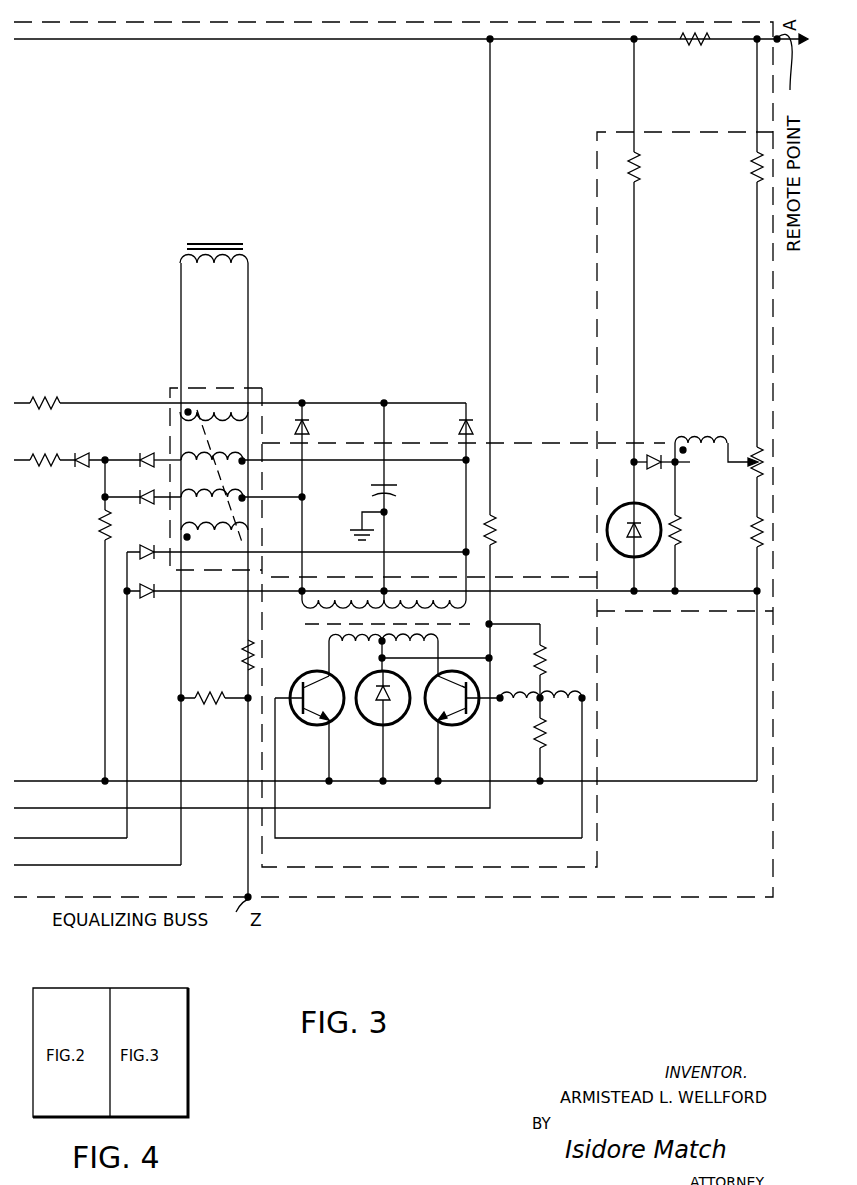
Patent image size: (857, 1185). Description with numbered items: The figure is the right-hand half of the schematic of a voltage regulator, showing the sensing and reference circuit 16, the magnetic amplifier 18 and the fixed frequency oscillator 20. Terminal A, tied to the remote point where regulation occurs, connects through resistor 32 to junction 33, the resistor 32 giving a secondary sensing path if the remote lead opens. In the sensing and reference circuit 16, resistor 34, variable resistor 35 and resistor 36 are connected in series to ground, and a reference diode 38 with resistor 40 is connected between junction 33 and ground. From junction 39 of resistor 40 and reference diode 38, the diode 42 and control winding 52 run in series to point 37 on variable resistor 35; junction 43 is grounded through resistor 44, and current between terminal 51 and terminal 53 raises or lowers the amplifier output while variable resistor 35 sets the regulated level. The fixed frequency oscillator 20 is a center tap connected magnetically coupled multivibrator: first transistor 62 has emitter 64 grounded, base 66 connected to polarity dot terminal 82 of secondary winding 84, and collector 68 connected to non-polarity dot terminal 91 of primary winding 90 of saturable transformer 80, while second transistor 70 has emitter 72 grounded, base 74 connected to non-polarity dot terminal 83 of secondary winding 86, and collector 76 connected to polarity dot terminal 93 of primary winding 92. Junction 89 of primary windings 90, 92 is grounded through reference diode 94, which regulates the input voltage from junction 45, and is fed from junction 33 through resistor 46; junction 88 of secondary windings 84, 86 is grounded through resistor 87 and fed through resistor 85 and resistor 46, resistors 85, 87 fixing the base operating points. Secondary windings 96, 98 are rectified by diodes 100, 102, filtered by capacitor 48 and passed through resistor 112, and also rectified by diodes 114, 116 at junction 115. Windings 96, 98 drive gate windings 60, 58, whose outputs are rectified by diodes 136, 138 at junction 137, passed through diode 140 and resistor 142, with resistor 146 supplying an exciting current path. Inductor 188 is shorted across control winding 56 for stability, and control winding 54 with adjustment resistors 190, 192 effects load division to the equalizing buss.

The sensing and reference circuit 16 is at (674, 133).
The magnetic amplifier 18 is at (259, 387).
The fixed frequency oscillator 20 is at (598, 812).
The resistor 32 is at (684, 43).
The junction 33 is at (632, 43).
The resistor 34 is at (752, 172).
The variable resistor 35 is at (764, 462).
The resistor 36 is at (752, 540).
The point on resistor 35 37 is at (752, 468).
The reference diode 38 is at (660, 556).
The junction 39 is at (632, 467).
The resistor 40 is at (653, 250).
The diode 42 is at (656, 467).
The junction 43 is at (694, 464).
The resistor 44 is at (680, 546).
The junction 45 is at (518, 688).
The resistor 46 is at (495, 531).
The filter capacitor 48 is at (395, 487).
The terminal of control winding 52 51 is at (732, 456).
The control winding 52 is at (713, 441).
The terminal of control winding 52 53 is at (676, 443).
The control winding 54 is at (243, 500).
The additional magnetic amplifier control winding 56 is at (201, 421).
The gate winding 58 is at (232, 463).
The gate winding 60 is at (218, 528).
The first transistor 62 is at (362, 733).
The emitter 64 is at (322, 719).
The base 66 is at (280, 697).
The collector 68 is at (320, 674).
The second transistor 70 is at (466, 762).
The emitter 72 is at (454, 708).
The base 74 is at (474, 720).
The collector 76 is at (462, 684).
The saturable transformer 80 is at (290, 643).
The polarity dot terminal 82 is at (583, 694).
The non-polarity dot terminal 83 is at (505, 700).
The secondary winding 84 is at (558, 700).
The resistor 85 is at (545, 656).
The secondary winding 86 is at (536, 704).
The resistor 87 is at (545, 740).
The junction 88 is at (544, 696).
The junction 89 is at (380, 660).
The primary winding 90 is at (352, 645).
The non-polarity dot terminal 91 is at (329, 645).
The primary winding 92 is at (413, 645).
The polarity dot terminal 93 is at (440, 645).
The reference diode 94 is at (380, 734).
The secondary winding 96 is at (365, 612).
The secondary winding 98 is at (426, 602).
The diode 100 is at (307, 422).
The diode 102 is at (459, 425).
The resistor 112 is at (45, 403).
The diode 114 is at (145, 550).
The junction 115 is at (128, 596).
The diode 116 is at (165, 588).
The diode 136 is at (160, 450).
The junction 137 is at (100, 450).
The diode 138 is at (143, 495).
The diode 140 is at (98, 465).
The resistor 142 is at (66, 458).
The resistor 146 is at (100, 530).
The inductor 188 is at (213, 266).
The adjustment resistor 190 is at (228, 700).
The adjustment resistor 192 is at (247, 646).